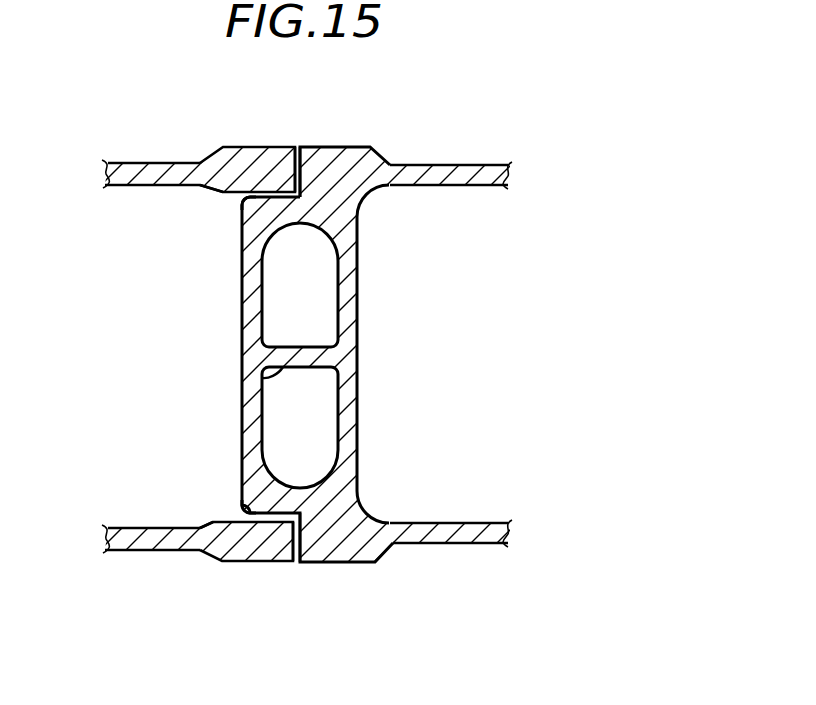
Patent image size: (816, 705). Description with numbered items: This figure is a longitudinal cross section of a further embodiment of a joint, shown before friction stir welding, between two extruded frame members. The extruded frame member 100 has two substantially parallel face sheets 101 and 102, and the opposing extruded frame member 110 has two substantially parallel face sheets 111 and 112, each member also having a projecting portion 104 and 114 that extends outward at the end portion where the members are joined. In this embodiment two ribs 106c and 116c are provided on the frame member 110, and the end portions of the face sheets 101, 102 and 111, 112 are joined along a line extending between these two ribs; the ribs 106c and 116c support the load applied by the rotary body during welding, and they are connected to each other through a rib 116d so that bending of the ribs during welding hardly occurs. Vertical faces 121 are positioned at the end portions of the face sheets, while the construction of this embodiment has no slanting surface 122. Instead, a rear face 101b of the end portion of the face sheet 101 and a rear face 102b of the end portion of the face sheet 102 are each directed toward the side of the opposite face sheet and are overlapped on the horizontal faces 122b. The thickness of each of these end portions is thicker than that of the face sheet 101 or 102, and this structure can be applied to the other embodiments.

The extruded frame member 100 is at (88, 147).
The face sheet 101 is at (137, 167).
The rear face 101b is at (230, 191).
The face sheet 102 is at (162, 550).
The rear face 102b is at (228, 520).
The projecting portion 104 is at (233, 145).
The rib 106c is at (242, 325).
The extruded frame member 110 is at (418, 110).
The face sheet 111 is at (495, 147).
The face sheet 112 is at (437, 543).
The projecting portion 114 is at (345, 147).
The rib 116c is at (357, 393).
The rib 116d is at (262, 375).
The vertical face 121 is at (282, 562).
The slanting surface 122 is at (291, 152).
The horizontal face 122b is at (243, 225).